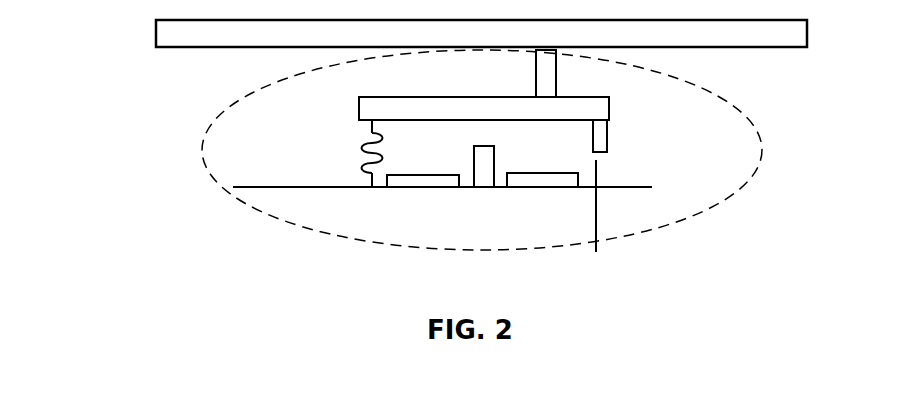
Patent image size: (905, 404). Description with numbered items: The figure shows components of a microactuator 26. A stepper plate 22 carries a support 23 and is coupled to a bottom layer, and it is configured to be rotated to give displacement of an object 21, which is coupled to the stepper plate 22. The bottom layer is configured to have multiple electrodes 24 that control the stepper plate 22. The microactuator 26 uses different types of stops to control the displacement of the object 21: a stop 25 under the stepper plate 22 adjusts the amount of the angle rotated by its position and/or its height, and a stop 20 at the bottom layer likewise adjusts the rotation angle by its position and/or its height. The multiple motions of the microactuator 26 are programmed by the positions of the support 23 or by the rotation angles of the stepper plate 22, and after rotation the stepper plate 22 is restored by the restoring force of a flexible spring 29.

The stop 20 is at (495, 167).
The object 21 is at (748, 43).
The stepper plate 22 is at (470, 113).
The support 23 is at (552, 73).
The electrode 24 is at (413, 182).
The stop 25 is at (601, 220).
The microactuator 26 is at (202, 135).
The flexible spring 29 is at (363, 150).